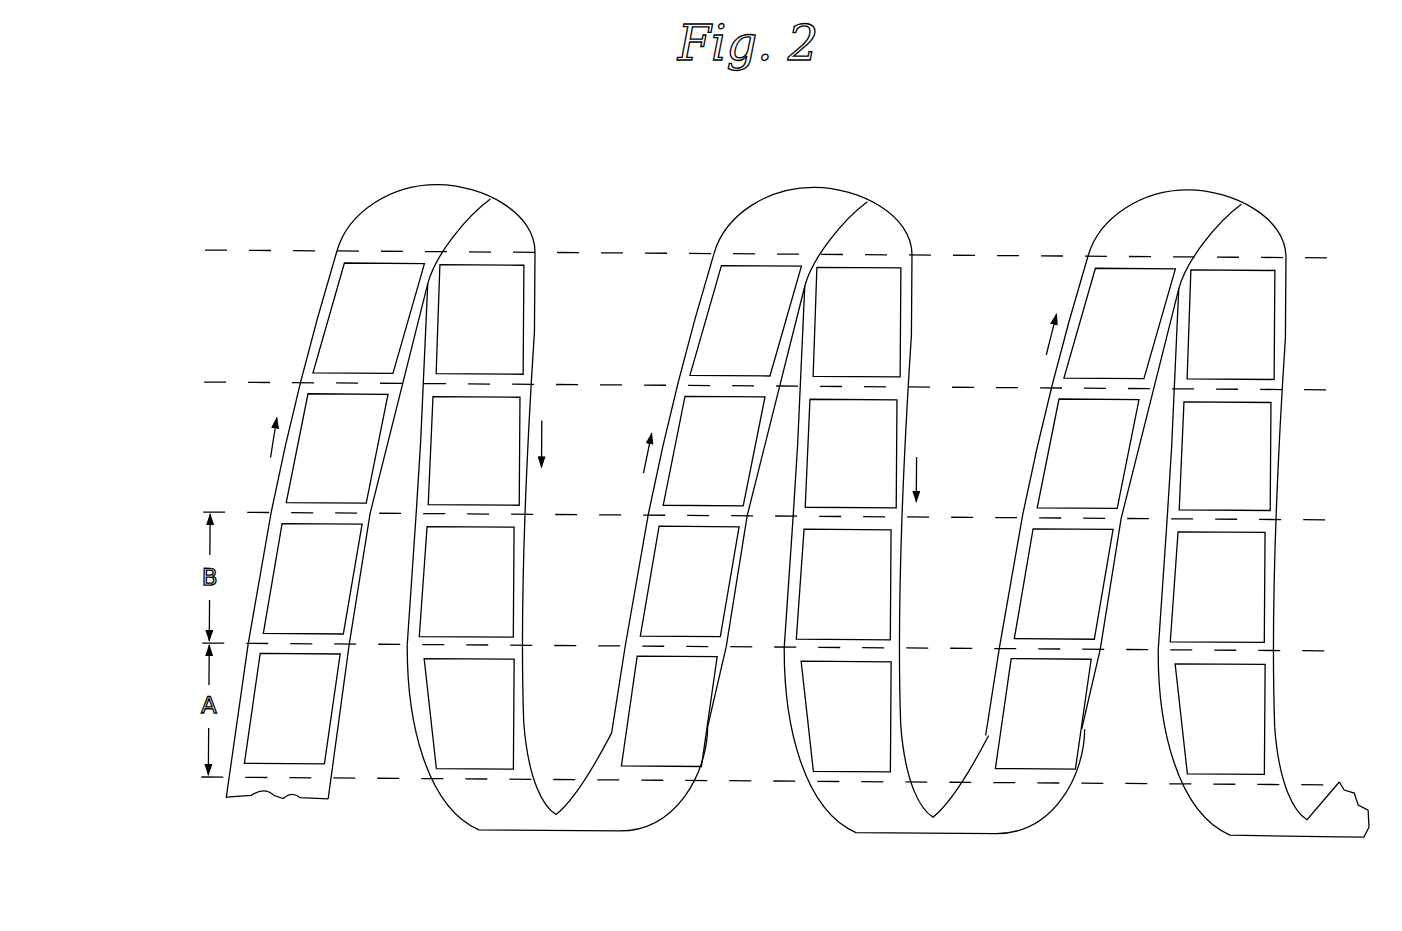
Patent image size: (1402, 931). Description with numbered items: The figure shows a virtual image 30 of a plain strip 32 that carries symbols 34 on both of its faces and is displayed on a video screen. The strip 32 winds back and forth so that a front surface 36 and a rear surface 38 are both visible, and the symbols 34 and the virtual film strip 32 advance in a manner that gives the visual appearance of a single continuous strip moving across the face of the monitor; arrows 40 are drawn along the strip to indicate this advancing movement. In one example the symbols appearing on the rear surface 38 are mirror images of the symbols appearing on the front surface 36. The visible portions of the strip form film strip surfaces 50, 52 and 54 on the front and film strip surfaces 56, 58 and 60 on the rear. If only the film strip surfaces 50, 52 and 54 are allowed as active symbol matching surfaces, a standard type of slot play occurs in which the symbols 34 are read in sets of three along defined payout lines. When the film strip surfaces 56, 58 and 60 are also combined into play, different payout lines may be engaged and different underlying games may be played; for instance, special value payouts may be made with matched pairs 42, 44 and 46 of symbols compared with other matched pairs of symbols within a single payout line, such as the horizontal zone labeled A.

The virtual image 30 is at (700, 153).
The plain strip 32 is at (490, 184).
The symbols 34 is at (712, 327).
The front surface 36 is at (283, 495).
The rear surface 38 is at (530, 469).
The direction of web travel arrows 40 is at (271, 452).
The matched pair of symbols 42 is at (442, 720).
The matched pair of symbols 44 is at (889, 747).
The matched pair of symbols 46 is at (1218, 751).
The film strip surface 50 is at (306, 332).
The film strip surface 52 is at (740, 467).
The film strip surface 54 is at (1114, 470).
The film strip surface 56 is at (537, 328).
The film strip surface 58 is at (886, 489).
The film strip surface 60 is at (1262, 492).